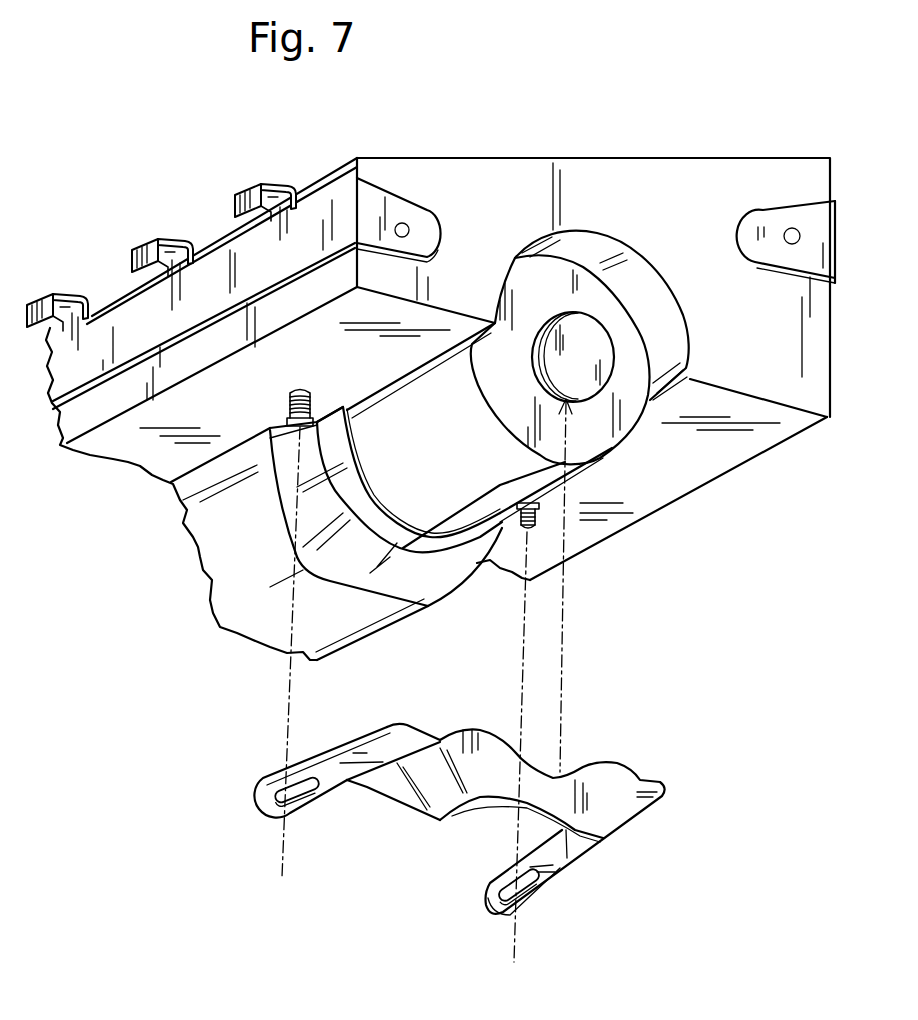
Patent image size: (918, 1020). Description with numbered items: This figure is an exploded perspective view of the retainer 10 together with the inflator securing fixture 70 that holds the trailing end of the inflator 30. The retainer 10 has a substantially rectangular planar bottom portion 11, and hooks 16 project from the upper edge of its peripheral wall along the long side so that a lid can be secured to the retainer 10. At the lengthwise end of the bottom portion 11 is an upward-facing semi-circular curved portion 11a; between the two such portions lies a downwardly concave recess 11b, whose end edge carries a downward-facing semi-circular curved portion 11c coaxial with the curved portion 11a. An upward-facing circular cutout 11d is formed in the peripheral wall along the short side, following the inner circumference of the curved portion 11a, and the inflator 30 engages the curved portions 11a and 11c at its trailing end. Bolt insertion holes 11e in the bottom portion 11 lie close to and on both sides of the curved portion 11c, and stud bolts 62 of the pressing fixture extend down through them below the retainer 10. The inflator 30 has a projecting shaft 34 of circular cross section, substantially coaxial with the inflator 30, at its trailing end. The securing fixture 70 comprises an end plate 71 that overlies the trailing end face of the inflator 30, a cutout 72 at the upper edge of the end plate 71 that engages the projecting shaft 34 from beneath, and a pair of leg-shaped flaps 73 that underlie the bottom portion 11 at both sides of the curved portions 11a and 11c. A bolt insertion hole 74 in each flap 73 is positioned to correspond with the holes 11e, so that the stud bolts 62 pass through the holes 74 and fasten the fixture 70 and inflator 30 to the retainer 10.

The retainer 10 is at (648, 88).
The bottom portion 11 is at (726, 172).
The upward-facing semi-circular curved portion 11a is at (688, 364).
The recess 11b is at (213, 573).
The downward-facing semi-circular curved portion 11c is at (398, 498).
The upward-facing circular cutout 11d is at (598, 240).
The bolt insertion hole 11e is at (309, 396).
The hook 16 is at (40, 296).
The inflator 30 is at (544, 272).
The projecting shaft 34 is at (598, 343).
The stud bolt 62 is at (288, 406).
The inflator securing fixture 70 is at (594, 910).
The end plate 71 is at (608, 785).
The cutout 72 is at (566, 773).
The leg-shaped flap 73 is at (327, 770).
The bolt insertion hole 74 is at (263, 797).